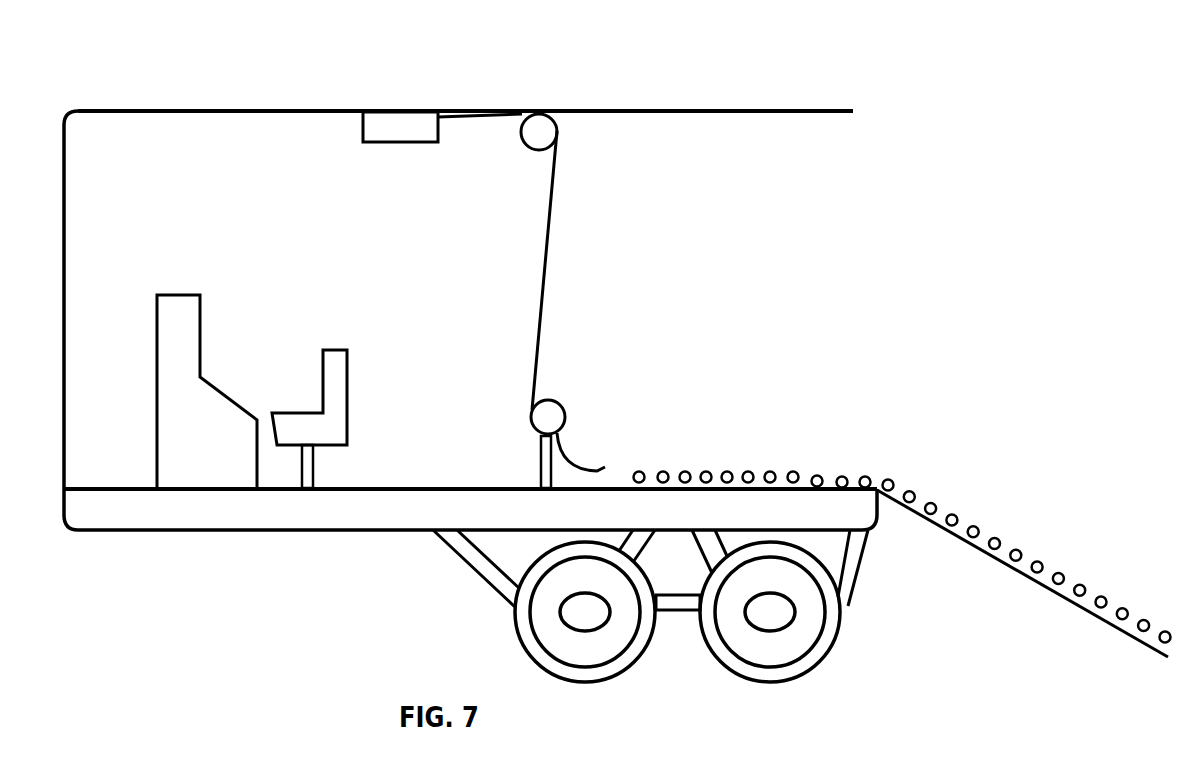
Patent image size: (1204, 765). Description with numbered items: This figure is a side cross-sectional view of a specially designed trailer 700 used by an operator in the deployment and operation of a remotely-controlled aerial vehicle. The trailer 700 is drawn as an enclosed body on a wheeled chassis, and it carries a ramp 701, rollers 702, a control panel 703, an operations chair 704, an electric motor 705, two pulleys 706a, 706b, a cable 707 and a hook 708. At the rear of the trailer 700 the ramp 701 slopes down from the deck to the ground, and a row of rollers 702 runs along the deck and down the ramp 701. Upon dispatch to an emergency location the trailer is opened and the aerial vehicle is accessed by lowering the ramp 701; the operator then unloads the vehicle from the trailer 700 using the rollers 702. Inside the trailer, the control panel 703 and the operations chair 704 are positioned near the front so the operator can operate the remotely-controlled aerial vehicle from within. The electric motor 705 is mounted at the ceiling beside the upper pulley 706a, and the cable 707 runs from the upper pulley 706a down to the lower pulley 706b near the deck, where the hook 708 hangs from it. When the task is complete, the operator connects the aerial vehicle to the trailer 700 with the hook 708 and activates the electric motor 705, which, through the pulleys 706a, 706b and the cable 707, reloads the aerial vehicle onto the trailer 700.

The trailer 700 is at (133, 66).
The ramp 701 is at (972, 548).
The rollers 702 is at (930, 505).
The control panel 703 is at (210, 467).
The operations chair 704 is at (322, 430).
The electric motor 705 is at (398, 132).
The pulley 706a is at (547, 137).
The pulley 706b is at (550, 410).
The cable 707 is at (548, 267).
The hook 708 is at (605, 455).